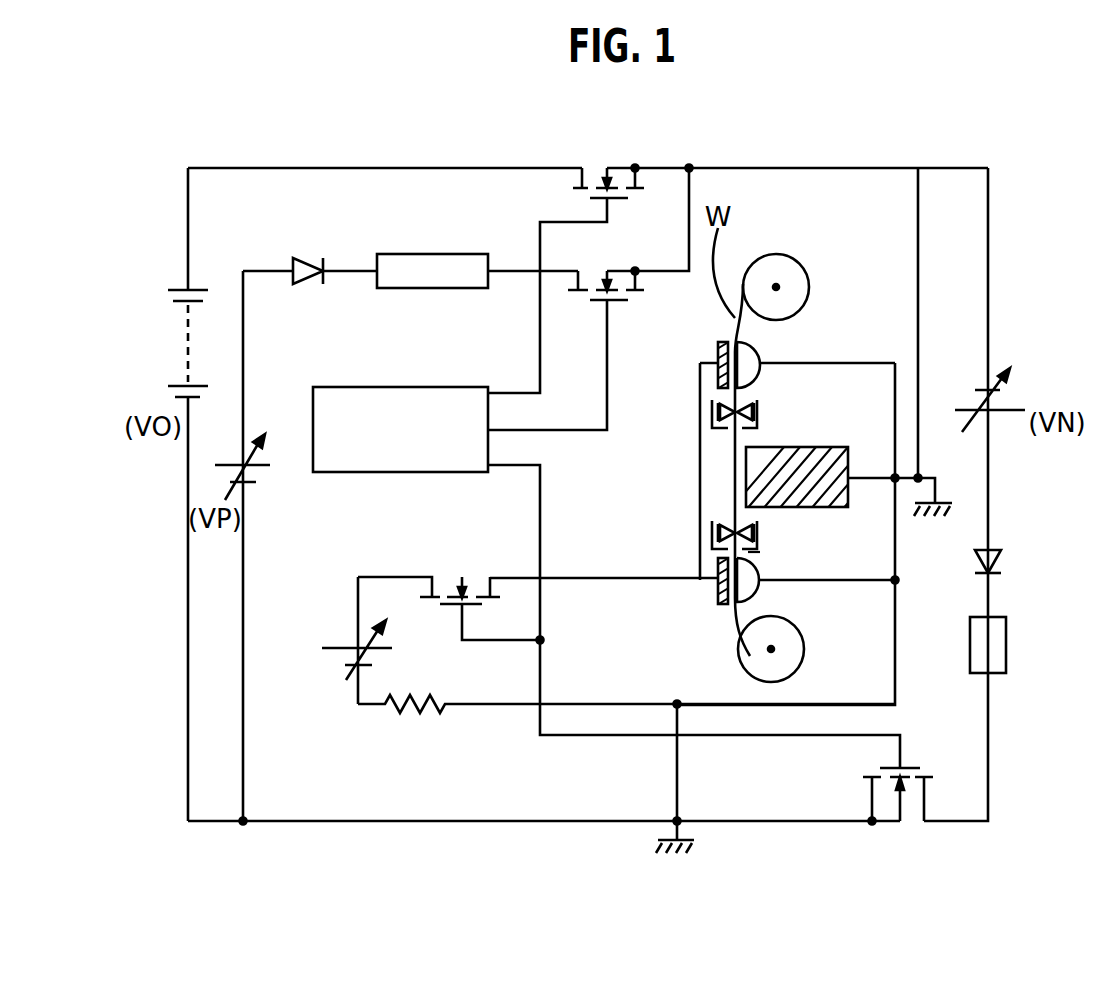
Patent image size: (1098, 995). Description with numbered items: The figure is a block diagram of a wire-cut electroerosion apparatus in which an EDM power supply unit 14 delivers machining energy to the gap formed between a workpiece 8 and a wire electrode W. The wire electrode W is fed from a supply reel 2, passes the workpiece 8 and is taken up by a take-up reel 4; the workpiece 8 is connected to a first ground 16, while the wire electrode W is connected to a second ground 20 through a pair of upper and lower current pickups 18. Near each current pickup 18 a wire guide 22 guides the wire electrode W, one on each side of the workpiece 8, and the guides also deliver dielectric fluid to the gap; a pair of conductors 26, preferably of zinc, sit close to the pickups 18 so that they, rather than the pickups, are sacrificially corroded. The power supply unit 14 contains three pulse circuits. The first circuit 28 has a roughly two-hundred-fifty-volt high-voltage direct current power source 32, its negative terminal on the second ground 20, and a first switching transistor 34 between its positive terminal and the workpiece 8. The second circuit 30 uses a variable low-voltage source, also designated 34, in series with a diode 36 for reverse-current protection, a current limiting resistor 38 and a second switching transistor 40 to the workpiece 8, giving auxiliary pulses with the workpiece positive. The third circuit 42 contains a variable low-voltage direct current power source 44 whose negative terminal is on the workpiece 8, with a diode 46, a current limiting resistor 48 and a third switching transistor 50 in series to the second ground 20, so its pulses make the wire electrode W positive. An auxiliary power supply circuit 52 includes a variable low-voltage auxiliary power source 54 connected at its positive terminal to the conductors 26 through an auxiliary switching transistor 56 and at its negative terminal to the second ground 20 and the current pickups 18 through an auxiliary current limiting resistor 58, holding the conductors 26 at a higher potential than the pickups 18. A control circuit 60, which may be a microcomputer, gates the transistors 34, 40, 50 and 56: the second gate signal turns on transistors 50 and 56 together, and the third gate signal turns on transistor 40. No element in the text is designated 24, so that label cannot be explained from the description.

The supply reel 2 is at (804, 256).
The take-up reel 4 is at (795, 662).
The workpiece 8 is at (751, 496).
The EDM power supply unit 14 is at (264, 168).
The first ground 16 is at (911, 514).
The current pickups 18 is at (762, 364).
The second ground 20 is at (656, 842).
The wire guides 22 is at (750, 410).
The electrode holders 24 is at (712, 413).
The conductors 26 is at (722, 604).
The first circuit 28 is at (498, 168).
The second circuit 30 is at (243, 270).
The high-voltage direct current power source 32 is at (186, 362).
The first switching transistor 34 is at (614, 168).
The diode 36 is at (309, 283).
The current limiting resistor 38 is at (438, 288).
The second switching transistor 40 is at (590, 300).
The third circuit 42 is at (990, 735).
The variable low-voltage direct current power source 44 is at (1005, 398).
The diode 46 is at (994, 560).
The current limiting resistor 48 is at (1006, 648).
The third switching transistor 50 is at (921, 768).
The auxiliary power supply circuit 52 is at (438, 724).
The variable low-voltage auxiliary power source 54 is at (344, 664).
The auxiliary switching transistor 56 is at (440, 596).
The auxiliary current limiting resistor 58 is at (440, 702).
The control circuit 60 is at (421, 387).